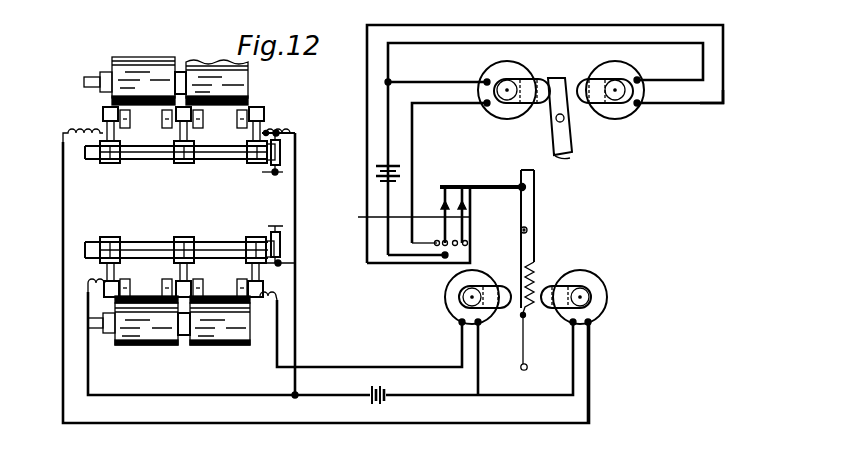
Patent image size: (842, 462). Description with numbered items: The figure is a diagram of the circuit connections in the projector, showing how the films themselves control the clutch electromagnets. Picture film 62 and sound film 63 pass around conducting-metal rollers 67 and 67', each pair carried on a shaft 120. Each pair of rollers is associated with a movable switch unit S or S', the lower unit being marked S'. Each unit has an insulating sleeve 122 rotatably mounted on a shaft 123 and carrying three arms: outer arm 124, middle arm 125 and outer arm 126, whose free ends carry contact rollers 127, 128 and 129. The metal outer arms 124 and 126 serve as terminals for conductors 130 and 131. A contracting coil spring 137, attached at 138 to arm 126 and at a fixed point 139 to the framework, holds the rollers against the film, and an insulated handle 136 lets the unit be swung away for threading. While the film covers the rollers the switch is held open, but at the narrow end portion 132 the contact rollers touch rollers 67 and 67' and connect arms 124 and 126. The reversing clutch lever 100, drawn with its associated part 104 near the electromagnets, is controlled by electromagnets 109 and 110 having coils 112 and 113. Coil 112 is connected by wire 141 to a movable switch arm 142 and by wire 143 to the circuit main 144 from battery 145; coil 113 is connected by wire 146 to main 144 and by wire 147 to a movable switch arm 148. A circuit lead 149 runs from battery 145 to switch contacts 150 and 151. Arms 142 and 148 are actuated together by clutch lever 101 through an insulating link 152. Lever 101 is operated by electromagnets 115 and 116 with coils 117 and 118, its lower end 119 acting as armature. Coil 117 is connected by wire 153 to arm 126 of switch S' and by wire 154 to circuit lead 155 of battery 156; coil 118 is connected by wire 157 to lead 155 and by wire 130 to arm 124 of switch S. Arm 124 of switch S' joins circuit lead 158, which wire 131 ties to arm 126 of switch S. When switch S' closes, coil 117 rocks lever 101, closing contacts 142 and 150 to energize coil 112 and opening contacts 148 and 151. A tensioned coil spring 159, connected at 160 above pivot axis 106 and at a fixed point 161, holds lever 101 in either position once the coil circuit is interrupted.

The rollers 67 is at (145, 204).
The rollers 67' is at (218, 198).
The shaft 120 is at (84, 83).
The contact rollers 128 is at (175, 124).
The contact roller 127 is at (103, 113).
The film 62 is at (126, 113).
The film 63 is at (199, 114).
The contact roller 129 is at (247, 126).
The middle arm 125 is at (176, 158).
The shaft 123 is at (99, 165).
The switch unit S is at (176, 167).
The switch unit S' is at (176, 241).
The insulating sleeve 122 is at (208, 158).
The narrow end portion 132 is at (128, 297).
The outer arm 124 is at (75, 140).
The outer arm 126 is at (258, 115).
The wire 130 is at (63, 208).
The wire 131 is at (296, 204).
The attachment point 138 is at (296, 134).
The coil spring 137 is at (281, 153).
The fixed point 139 is at (284, 173).
The insulated handle 136 is at (275, 226).
The circuit lead 158 is at (215, 395).
The battery 156 is at (387, 396).
The circuit lead 155 is at (432, 395).
The wire 153 is at (375, 367).
The wire 154 is at (478, 377).
The wire 157 is at (575, 360).
The circuit main 144 is at (367, 90).
The wire 146 is at (650, 43).
The wire 147 is at (705, 104).
The wire 143 is at (455, 82).
The wire 141 is at (413, 119).
The battery 145 is at (394, 163).
The circuit lead 149 is at (386, 248).
The switch contact 150 is at (368, 217).
The movable switch arm 142 is at (438, 193).
The insulating link 152 is at (492, 185).
The switch contact 151 is at (466, 212).
The movable switch arm 148 is at (470, 226).
The clutch lever 101 is at (535, 243).
The spring connection point 160 is at (529, 216).
The pivot axis 106 is at (521, 233).
The coil spring 159 is at (537, 275).
The lower end 119 is at (519, 318).
The fixed point 161 is at (520, 367).
The electromagnet 115 is at (450, 284).
The coil 117 is at (445, 300).
The electromagnet 116 is at (594, 292).
The coil 118 is at (608, 293).
The coil 112 is at (495, 69).
The electromagnet 109 is at (528, 80).
The lever 104 is at (565, 79).
The reversing clutch lever 100 is at (572, 151).
The coil 113 is at (640, 111).
The electromagnet 110 is at (590, 103).